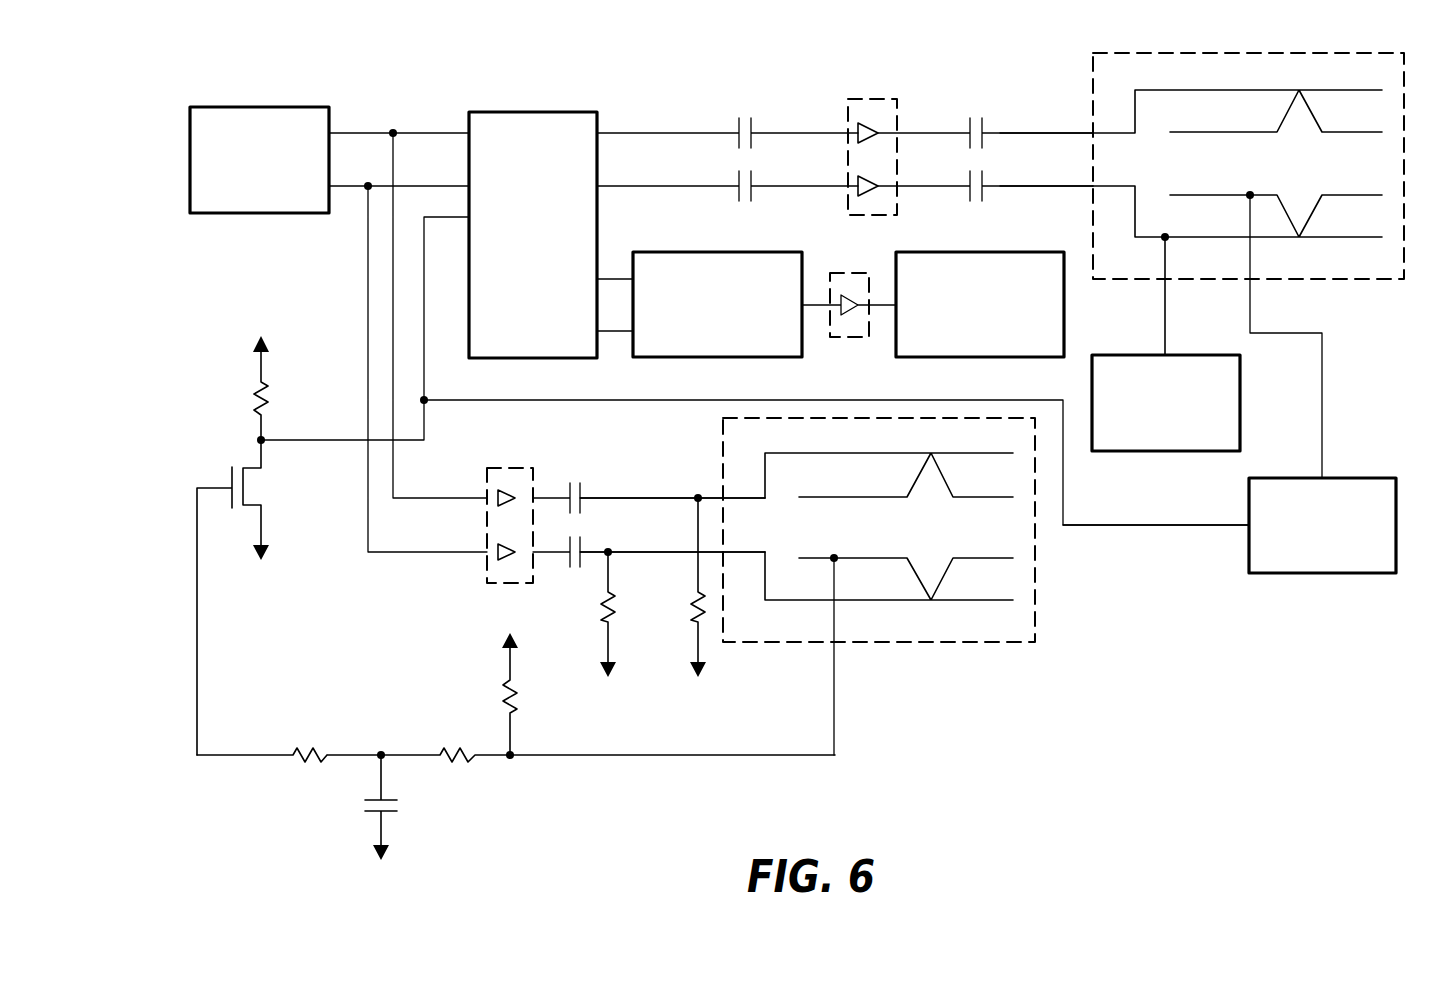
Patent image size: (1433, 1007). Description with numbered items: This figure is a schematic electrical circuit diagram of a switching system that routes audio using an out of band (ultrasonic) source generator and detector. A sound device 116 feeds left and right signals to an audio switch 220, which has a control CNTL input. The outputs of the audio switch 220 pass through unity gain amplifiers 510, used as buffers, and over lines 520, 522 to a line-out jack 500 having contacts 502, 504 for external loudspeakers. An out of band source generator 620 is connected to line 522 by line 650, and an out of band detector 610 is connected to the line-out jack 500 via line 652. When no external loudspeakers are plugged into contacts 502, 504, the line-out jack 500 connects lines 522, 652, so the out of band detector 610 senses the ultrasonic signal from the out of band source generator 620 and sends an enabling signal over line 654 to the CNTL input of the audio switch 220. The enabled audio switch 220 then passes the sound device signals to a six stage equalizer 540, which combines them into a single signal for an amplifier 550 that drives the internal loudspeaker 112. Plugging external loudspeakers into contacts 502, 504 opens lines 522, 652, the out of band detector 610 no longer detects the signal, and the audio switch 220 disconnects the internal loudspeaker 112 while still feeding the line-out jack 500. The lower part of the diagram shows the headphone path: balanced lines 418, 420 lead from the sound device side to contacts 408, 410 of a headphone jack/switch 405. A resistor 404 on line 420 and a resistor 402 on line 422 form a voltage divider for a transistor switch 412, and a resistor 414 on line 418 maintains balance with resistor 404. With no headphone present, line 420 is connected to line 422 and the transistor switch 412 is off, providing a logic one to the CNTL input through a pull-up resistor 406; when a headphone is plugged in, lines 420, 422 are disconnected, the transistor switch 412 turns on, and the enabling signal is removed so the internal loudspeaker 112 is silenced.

The sound device 116 is at (313, 107).
The audio switch 220 is at (571, 112).
The unity gain amplifiers 510 is at (874, 99).
The line 520 is at (1013, 133).
The line 522 is at (1050, 186).
The amplifier 550 is at (845, 273).
The 6 stage equalizer 540 is at (763, 357).
The internal loudspeaker 112 is at (933, 357).
The line-out jack 500 is at (1340, 280).
The contact 502 is at (1380, 90).
The contact 504 is at (1380, 237).
The line 650 is at (1162, 338).
The line 652 is at (1322, 407).
The out of band source generator 620 is at (1137, 452).
The line 654 is at (1115, 527).
The out of band detector 610 is at (1295, 573).
The pull-up resistor 406 is at (265, 408).
The transistor switch 412 is at (228, 470).
The line 418 is at (688, 495).
The line 420 is at (682, 550).
The resistor 404 is at (605, 620).
The resistor 414 is at (695, 620).
The resistor 402 is at (520, 707).
The line 422 is at (835, 722).
The contact 410 is at (1012, 452).
The contact 408 is at (1012, 600).
The headphone jack/switch 405 is at (955, 645).